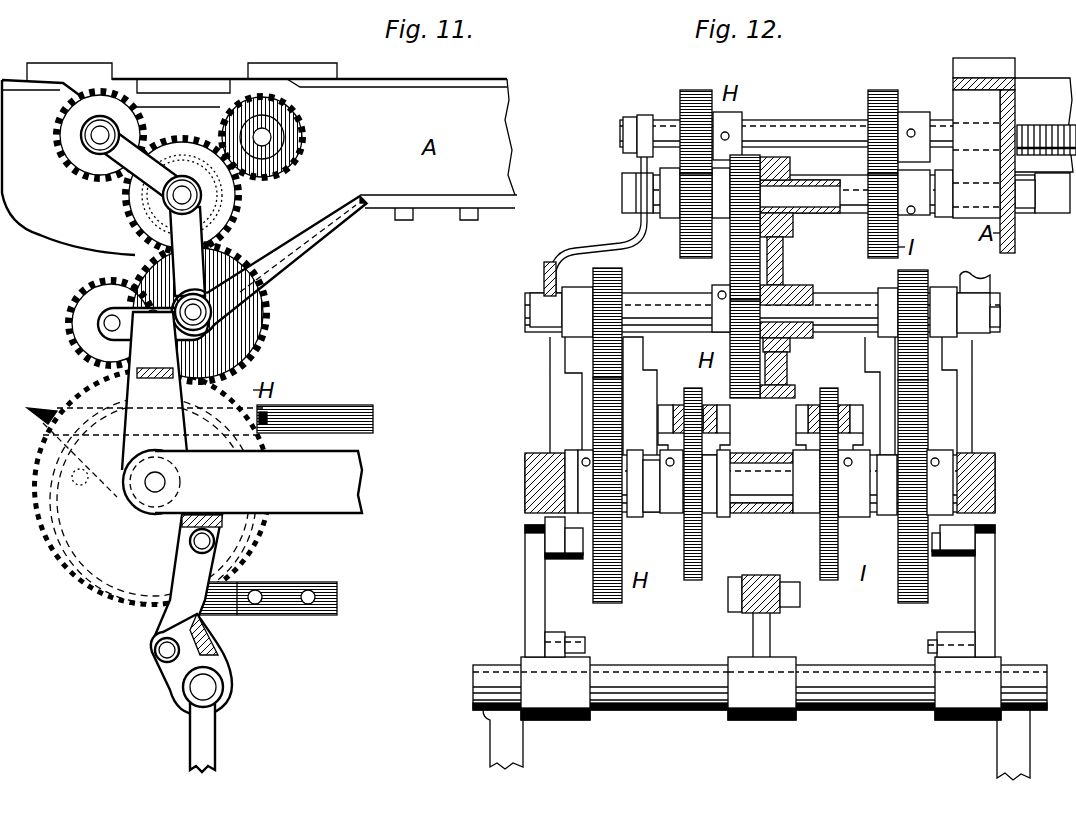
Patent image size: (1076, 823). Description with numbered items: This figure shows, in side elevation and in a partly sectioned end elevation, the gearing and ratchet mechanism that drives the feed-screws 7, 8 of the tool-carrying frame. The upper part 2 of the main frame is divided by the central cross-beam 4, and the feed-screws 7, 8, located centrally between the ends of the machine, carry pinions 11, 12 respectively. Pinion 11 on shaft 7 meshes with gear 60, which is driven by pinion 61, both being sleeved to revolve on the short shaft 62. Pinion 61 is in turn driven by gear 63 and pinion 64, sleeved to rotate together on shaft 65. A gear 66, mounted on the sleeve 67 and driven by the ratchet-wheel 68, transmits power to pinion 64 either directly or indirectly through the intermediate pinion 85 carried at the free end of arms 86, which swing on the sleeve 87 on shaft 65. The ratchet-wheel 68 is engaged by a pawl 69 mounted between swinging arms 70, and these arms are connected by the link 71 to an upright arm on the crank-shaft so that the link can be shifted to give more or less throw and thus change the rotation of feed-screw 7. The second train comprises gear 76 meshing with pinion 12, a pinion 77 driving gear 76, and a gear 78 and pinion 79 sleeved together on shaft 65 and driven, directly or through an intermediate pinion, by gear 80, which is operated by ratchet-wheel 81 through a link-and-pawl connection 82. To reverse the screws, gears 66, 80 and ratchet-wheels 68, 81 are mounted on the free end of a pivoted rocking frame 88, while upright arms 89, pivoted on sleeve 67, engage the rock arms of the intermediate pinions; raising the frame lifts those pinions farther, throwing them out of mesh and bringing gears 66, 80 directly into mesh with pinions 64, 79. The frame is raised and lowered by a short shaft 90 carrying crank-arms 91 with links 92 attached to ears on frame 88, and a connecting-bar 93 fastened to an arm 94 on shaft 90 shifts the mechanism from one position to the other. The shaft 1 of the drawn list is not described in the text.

In FIG. 12, the shaft 1 is at (810, 133).
In FIG. 11, the upper part of frame 2 is at (259, 167).
In FIG. 11, the central cross-beam 4 is at (183, 76).
In FIG. 12, the central cross-beam 4 is at (1038, 78).
In FIG. 11, the feed-screw 7 is at (87, 137).
In FIG. 12, the feed-screw 7 is at (776, 120).
In FIG. 11, the feed-screw 8 is at (283, 143).
In FIG. 12, the feed-screw 8 is at (937, 120).
In FIG. 11, the pinion 11 is at (58, 147).
In FIG. 12, the pinion 11 is at (692, 90).
In FIG. 11, the pinion 12 is at (307, 127).
In FIG. 12, the pinion 12 is at (880, 90).
In FIG. 11, the gear 60 is at (128, 197).
In FIG. 12, the gear 60 is at (680, 248).
In FIG. 11, the pinion 61 is at (143, 210).
In FIG. 12, the pinion 61 is at (720, 253).
In FIG. 11, the short shaft 62 is at (233, 197).
In FIG. 12, the short shaft 62 is at (846, 187).
In FIG. 11, the gear 63 is at (270, 347).
In FIG. 12, the gear 63 is at (730, 387).
In FIG. 11, the pinion 64 is at (210, 327).
In FIG. 12, the pinion 64 is at (623, 278).
In FIG. 11, the shaft 65 is at (200, 310).
In FIG. 12, the shaft 65 is at (812, 337).
In FIG. 11, the gear 66 is at (83, 578).
In FIG. 12, the gear 66 is at (593, 383).
In FIG. 12, the sleeve 67 is at (760, 483).
In FIG. 11, the ratchet-wheel 68 is at (102, 587).
In FIG. 12, the ratchet-wheel 68 is at (684, 545).
In FIG. 11, the pawl 69 is at (50, 410).
In FIG. 11, the swinging arms 70 is at (43, 430).
In FIG. 12, the swinging arms 70 is at (685, 396).
In FIG. 11, the link 71 is at (315, 409).
In FIG. 12, the link 71 is at (718, 410).
In FIG. 12, the gear 76 is at (868, 245).
In FIG. 12, the pinion 77 is at (793, 230).
In FIG. 12, the gear 78 is at (784, 262).
In FIG. 12, the pinion 79 is at (898, 277).
In FIG. 12, the gear 80 is at (927, 417).
In FIG. 12, the ratchet-wheel 81 is at (820, 548).
In FIG. 12, the link-and-pawl connection 82 is at (820, 395).
In FIG. 11, the intermediate pinion 85 is at (87, 338).
In FIG. 12, the intermediate pinion 85 is at (572, 317).
In FIG. 11, the arms 86 is at (100, 323).
In FIG. 12, the arms 86 is at (543, 337).
In FIG. 12, the sleeve 87 is at (762, 312).
In FIG. 11, the rocking frame 88 is at (242, 482).
In FIG. 12, the rocking frame 88 is at (525, 490).
In FIG. 11, the upright arms 89 is at (154, 391).
In FIG. 12, the upright arms 89 is at (565, 413).
In FIG. 11, the short shaft 90 is at (223, 686).
In FIG. 12, the short shaft 90 is at (473, 683).
In FIG. 11, the crank-arms 91 is at (160, 676).
In FIG. 12, the crank-arms 91 is at (557, 632).
In FIG. 11, the links 92 is at (160, 625).
In FIG. 12, the links 92 is at (525, 575).
In FIG. 11, the connecting-bar 93 is at (300, 582).
In FIG. 12, the connecting-bar 93 is at (750, 575).
In FIG. 11, the arm 94 is at (213, 638).
In FIG. 12, the arm 94 is at (777, 633).